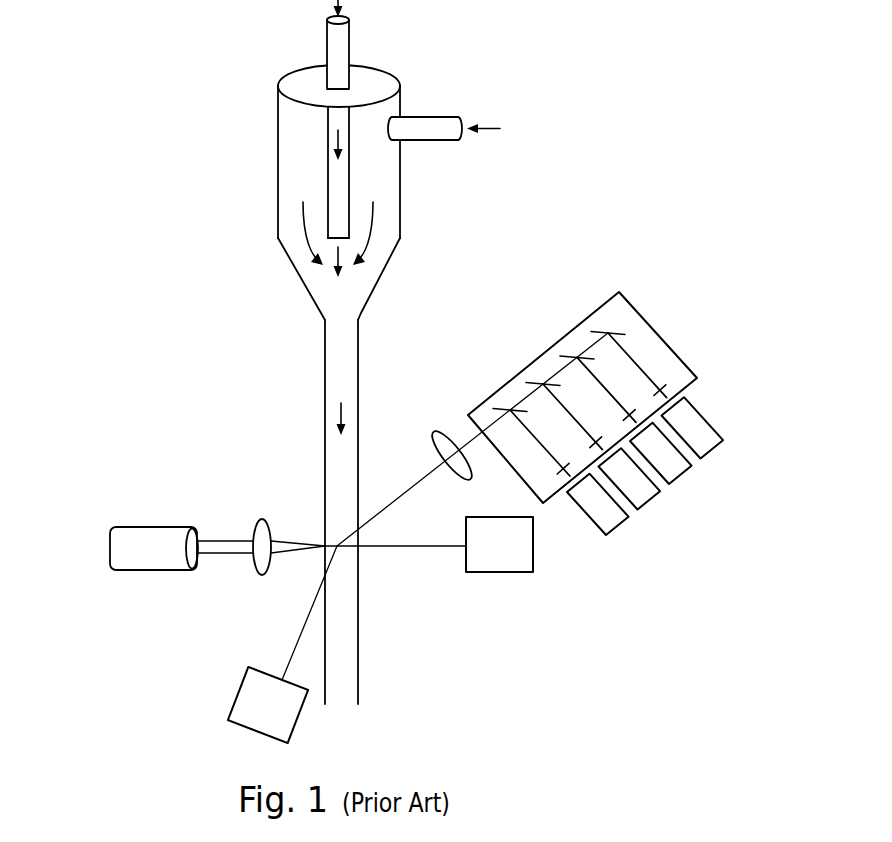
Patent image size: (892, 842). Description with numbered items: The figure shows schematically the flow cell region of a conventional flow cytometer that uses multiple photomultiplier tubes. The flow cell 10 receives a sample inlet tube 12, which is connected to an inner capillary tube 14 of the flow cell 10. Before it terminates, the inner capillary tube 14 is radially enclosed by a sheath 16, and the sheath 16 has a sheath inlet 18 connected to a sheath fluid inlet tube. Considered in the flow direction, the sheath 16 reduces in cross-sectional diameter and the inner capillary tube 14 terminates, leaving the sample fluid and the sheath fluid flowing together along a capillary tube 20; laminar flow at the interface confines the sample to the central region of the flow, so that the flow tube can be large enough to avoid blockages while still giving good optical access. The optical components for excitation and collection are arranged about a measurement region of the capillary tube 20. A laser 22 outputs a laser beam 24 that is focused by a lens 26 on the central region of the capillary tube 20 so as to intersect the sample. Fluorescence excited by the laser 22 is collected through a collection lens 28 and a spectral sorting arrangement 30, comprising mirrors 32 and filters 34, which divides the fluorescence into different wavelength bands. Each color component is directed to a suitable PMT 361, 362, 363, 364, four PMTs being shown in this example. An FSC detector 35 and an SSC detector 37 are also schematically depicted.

The flow cell 10 is at (99, 177).
The sample inlet tube 12 is at (350, 42).
The inner capillary tube 14 is at (327, 152).
The sheath 16 is at (278, 123).
The sheath inlet 18 is at (422, 143).
The capillary tube 20 is at (340, 348).
The laser 22 is at (108, 550).
The laser beam 24 is at (213, 557).
The lens 26 is at (258, 518).
The collection lens 28 is at (433, 433).
The spectral sorting arrangement 30 is at (621, 289).
The mirrors 32 is at (563, 347).
The filters 34 is at (660, 387).
The PMT 361 is at (619, 533).
The PMT 362 is at (647, 504).
The PMT 363 is at (680, 480).
The PMT 364 is at (715, 455).
The FSC detector 35 is at (498, 573).
The SSC detector 37 is at (230, 721).